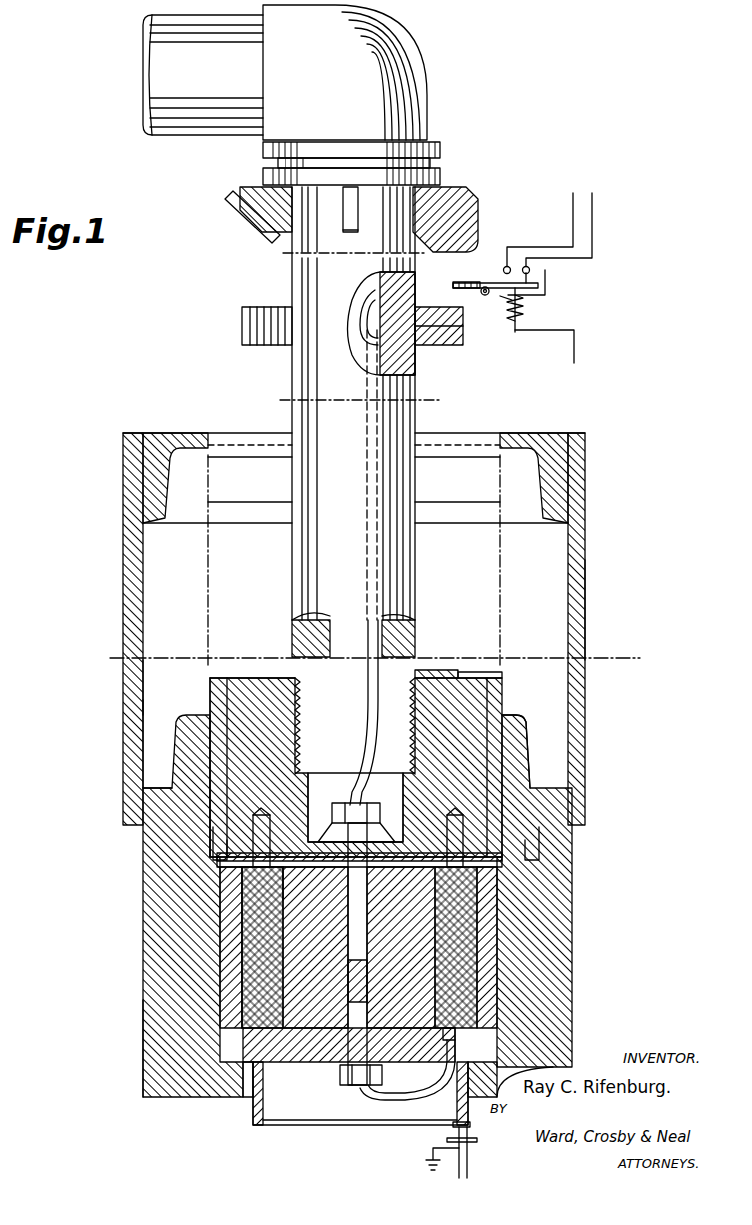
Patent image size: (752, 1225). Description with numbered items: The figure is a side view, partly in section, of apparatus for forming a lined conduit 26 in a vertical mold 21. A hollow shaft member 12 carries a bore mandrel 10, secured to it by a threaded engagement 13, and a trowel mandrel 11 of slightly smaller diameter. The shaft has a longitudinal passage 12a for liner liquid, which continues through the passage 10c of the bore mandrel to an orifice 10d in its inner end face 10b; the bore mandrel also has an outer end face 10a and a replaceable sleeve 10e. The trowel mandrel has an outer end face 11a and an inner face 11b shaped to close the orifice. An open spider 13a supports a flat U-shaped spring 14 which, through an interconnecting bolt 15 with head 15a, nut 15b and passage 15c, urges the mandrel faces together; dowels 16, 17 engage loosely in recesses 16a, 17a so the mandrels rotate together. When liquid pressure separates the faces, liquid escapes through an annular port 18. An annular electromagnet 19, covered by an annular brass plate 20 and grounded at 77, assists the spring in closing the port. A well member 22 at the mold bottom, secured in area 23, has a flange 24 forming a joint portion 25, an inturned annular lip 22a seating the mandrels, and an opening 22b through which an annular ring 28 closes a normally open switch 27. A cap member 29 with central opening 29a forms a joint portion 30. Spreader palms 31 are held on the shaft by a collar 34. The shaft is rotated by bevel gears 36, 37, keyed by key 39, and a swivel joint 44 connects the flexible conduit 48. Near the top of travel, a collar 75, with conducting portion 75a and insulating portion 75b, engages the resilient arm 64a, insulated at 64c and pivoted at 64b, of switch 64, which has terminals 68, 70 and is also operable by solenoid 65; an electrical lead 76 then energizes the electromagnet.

The conduit 48 is at (152, 137).
The swivel joint 44 is at (443, 150).
The bevel gear 37 is at (478, 215).
The bevel gear 36 is at (240, 224).
The key 39 is at (343, 230).
The shaft member 12 is at (418, 554).
The longitudinal passage 12a is at (298, 625).
The collar 75 is at (242, 325).
The outer electrically conducting metal portion 75a is at (463, 342).
The inner portion 75b is at (415, 360).
The electrical lead 76 is at (385, 428).
The central opening 29a is at (500, 443).
The cap member 29 is at (572, 478).
The joint portion 30 is at (195, 479).
The vertical mold 21 is at (587, 612).
The bore mandrel 10 is at (507, 755).
The passage 10c is at (405, 800).
The outer end face 10a is at (238, 677).
The replaceable sleeve 10e is at (208, 683).
The threaded engagement 13 is at (296, 678).
The open spider 13a is at (500, 878).
The collar 34 is at (441, 670).
The spreader palm 31 is at (477, 672).
The head 15a is at (352, 795).
The spring 14 is at (333, 822).
The interconnecting bolt 15 is at (345, 925).
The passage 15c is at (345, 985).
The nut 15b is at (345, 1085).
The dowel 17 is at (252, 840).
The dowel 16 is at (505, 852).
The recess 17a is at (215, 830).
The recess 16a is at (500, 828).
The annular port 18 is at (250, 862).
The orifice 10d is at (330, 865).
The annular brass plate 20 is at (262, 872).
The ground 77 is at (272, 880).
The inner end face 10b is at (235, 882).
The inner face 11b is at (225, 895).
The electromagnet 19 is at (478, 930).
The trowel mandrel 11 is at (240, 1020).
The outer end face 11a is at (288, 1066).
The well member 22 is at (575, 965).
The inturned annular lip 22a is at (225, 1045).
The opening 22b is at (243, 1090).
The securing area 23 is at (155, 805).
The flange 24 is at (518, 718).
The joint portion 25 is at (152, 765).
The conduit 26 is at (175, 685).
The switch 27 is at (438, 1138).
The annular ring 28 is at (470, 1127).
The terminal 68 is at (504, 267).
The terminal 70 is at (525, 267).
The switch 64 is at (540, 287).
The insulation 64c is at (468, 283).
The resilient arm 64a is at (480, 292).
The pivot 64b is at (487, 296).
The solenoid 65 is at (524, 314).